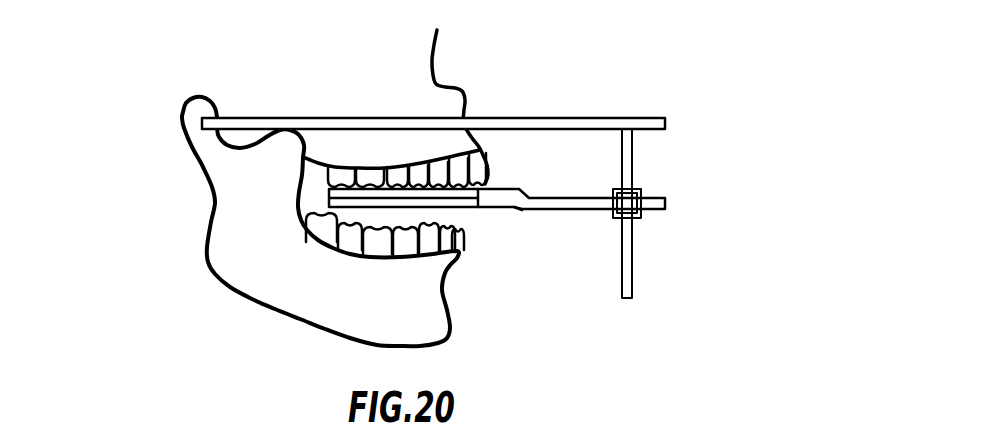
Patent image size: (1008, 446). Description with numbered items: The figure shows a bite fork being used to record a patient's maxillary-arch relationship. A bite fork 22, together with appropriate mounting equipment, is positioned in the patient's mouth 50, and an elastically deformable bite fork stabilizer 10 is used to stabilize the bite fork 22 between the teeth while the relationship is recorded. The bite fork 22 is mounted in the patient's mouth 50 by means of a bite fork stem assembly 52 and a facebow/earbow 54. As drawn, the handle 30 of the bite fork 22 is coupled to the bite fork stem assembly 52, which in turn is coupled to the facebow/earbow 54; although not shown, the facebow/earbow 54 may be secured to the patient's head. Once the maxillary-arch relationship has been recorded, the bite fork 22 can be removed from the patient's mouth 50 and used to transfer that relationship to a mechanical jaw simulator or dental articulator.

The bite fork stabilizer 10 is at (362, 211).
The bite fork 22 is at (513, 216).
The handle 30 is at (555, 209).
The patient's mouth 50 is at (207, 180).
The bite fork stem assembly 52 is at (633, 152).
The facebow/earbow 54 is at (608, 117).